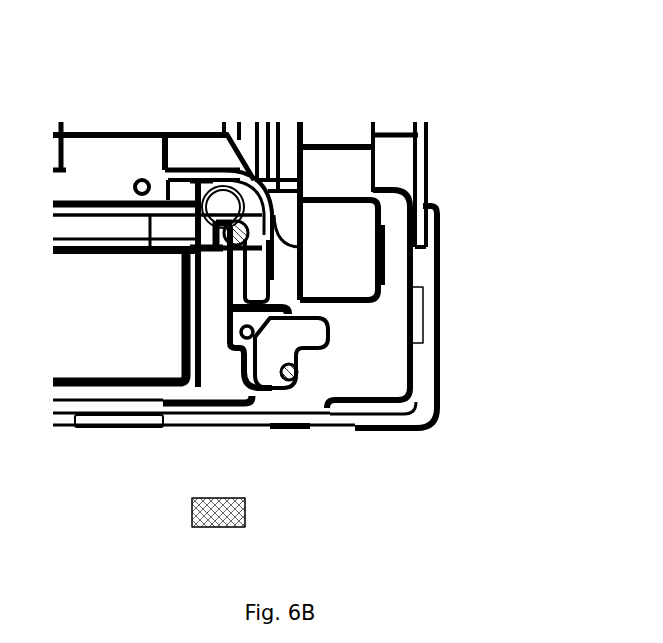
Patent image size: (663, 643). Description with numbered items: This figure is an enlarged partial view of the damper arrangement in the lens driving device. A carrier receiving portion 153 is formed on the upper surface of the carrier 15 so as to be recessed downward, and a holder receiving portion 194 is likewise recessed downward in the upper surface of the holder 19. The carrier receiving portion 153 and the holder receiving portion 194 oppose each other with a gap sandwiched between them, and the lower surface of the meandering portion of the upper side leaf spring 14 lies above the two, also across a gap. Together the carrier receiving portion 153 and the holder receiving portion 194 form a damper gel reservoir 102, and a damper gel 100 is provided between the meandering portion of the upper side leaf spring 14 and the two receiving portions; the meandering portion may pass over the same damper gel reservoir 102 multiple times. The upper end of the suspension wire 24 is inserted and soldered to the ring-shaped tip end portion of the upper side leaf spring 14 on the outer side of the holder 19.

The carrier 15 is at (202, 139).
The damper gel 100 is at (237, 142).
The carrier receiving portion 153 is at (272, 201).
The holder receiving portion 194 is at (272, 230).
The upper side leaf spring 14 is at (272, 262).
The damper gel reservoir 102 is at (388, 235).
The holder 19 is at (218, 380).
The suspension wire 24 is at (298, 383).